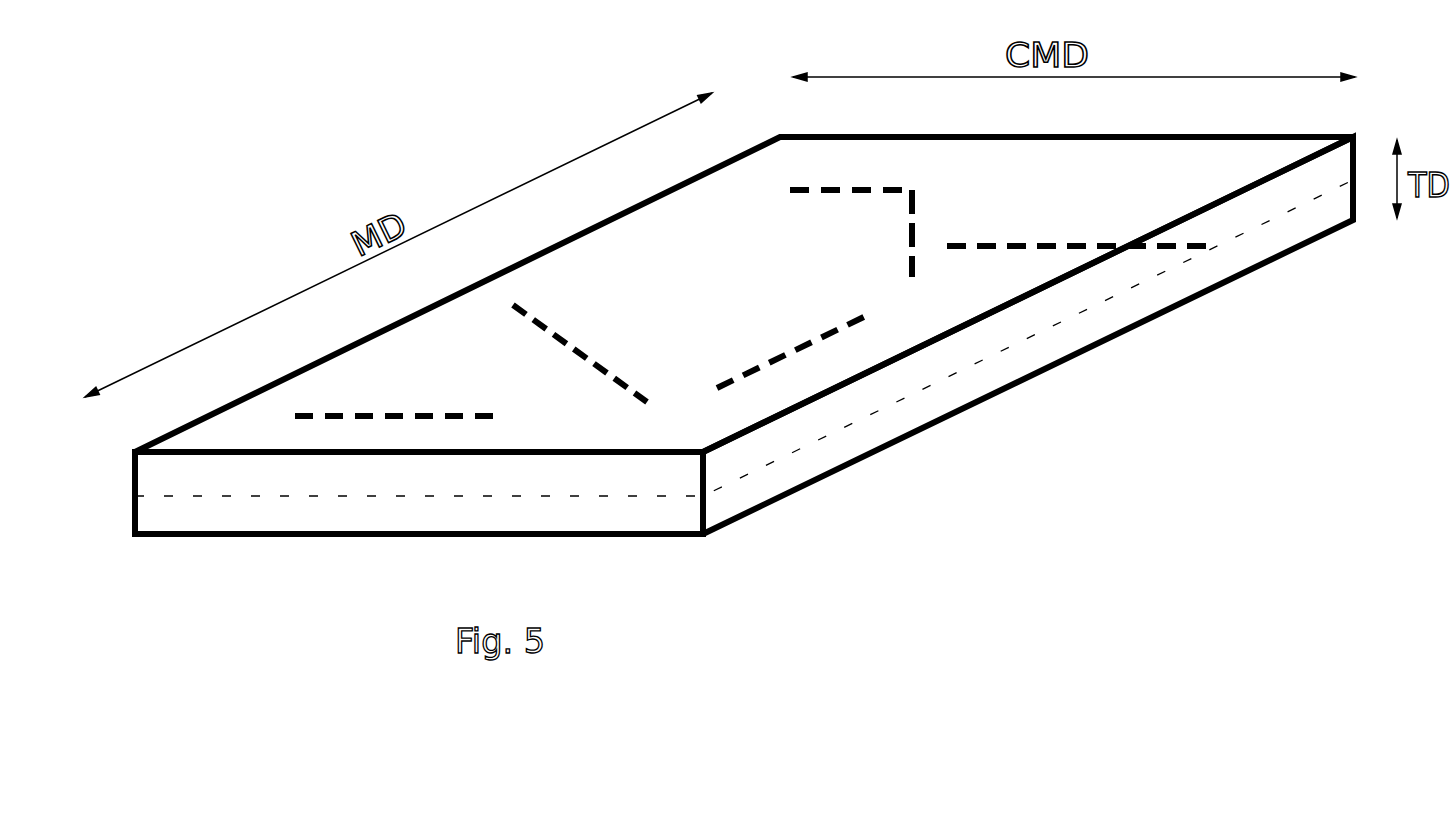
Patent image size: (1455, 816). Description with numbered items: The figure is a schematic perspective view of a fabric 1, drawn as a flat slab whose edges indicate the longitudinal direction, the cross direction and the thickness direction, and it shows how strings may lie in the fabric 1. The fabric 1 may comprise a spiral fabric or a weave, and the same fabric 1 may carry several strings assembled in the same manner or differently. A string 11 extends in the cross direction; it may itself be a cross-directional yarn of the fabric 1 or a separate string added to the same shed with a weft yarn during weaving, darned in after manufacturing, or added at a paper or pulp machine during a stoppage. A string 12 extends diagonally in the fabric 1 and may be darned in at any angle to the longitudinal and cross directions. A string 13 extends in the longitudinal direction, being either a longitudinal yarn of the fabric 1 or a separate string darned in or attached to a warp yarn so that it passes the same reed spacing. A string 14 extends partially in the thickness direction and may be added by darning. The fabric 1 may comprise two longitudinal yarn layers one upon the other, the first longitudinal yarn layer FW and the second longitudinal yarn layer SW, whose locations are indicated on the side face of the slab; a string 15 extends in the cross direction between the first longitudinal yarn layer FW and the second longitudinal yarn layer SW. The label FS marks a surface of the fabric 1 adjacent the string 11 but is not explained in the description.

The fabric 1 is at (668, 383).
The string 11 is at (368, 418).
The string 12 is at (623, 378).
The string 13 is at (810, 350).
The string 14 is at (913, 263).
The string 15 is at (1210, 248).
The front side FS is at (573, 418).
The first longitudinal yarn layer FW is at (1062, 298).
The second longitudinal yarn layer SW is at (1038, 352).